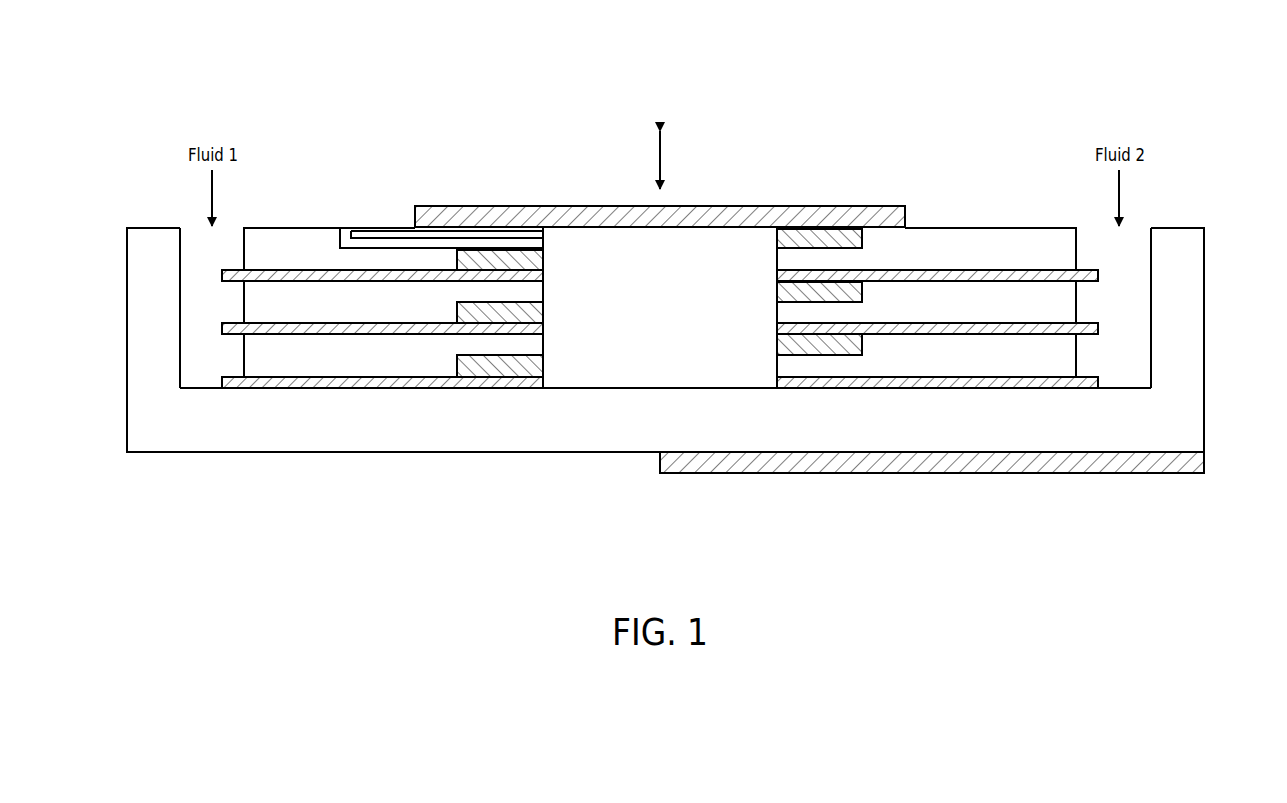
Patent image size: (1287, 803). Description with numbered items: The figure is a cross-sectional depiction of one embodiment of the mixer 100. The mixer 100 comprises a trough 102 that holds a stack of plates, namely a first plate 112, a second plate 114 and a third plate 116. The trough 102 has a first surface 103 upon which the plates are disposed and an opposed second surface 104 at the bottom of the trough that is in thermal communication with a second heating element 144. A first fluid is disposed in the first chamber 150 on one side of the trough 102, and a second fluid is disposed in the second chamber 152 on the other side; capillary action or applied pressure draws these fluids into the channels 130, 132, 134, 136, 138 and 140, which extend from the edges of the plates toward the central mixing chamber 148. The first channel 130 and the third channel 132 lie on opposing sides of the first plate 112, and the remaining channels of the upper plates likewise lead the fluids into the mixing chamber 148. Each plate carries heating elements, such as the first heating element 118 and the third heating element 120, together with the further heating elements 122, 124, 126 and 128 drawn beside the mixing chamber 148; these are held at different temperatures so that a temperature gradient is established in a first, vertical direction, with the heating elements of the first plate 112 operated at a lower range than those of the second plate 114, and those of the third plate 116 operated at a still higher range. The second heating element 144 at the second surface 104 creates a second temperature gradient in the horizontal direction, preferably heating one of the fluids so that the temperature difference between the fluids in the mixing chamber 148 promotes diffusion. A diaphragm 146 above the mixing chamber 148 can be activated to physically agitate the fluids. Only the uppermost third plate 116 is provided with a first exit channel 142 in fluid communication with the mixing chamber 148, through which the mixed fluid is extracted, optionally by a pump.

The mixer 100 is at (944, 110).
The trough 102 is at (158, 440).
The first surface 103 is at (201, 388).
The second surface 104 is at (602, 452).
The first plate 112 is at (284, 369).
The second plate 114 is at (284, 315).
The third plate 116 is at (284, 260).
The first heating element 118 is at (540, 369).
The third heating element 120 is at (862, 346).
The second left electrode 122 is at (540, 316).
The second right electrode 124 is at (862, 293).
The third left electrode 126 is at (540, 263).
The third right electrode 128 is at (862, 240).
The first channel 130 is at (359, 390).
The third channel 132 is at (1050, 390).
The channel 134 is at (357, 336).
The channel 136 is at (1050, 336).
The channel 138 is at (357, 283).
The channel 140 is at (1050, 282).
The first exit channel 142 is at (393, 243).
The second heating element 144 is at (722, 467).
The diaphragm 146 is at (792, 213).
The mixing chamber 148 is at (723, 365).
The first chamber 150 is at (198, 313).
The second chamber 152 is at (1135, 270).